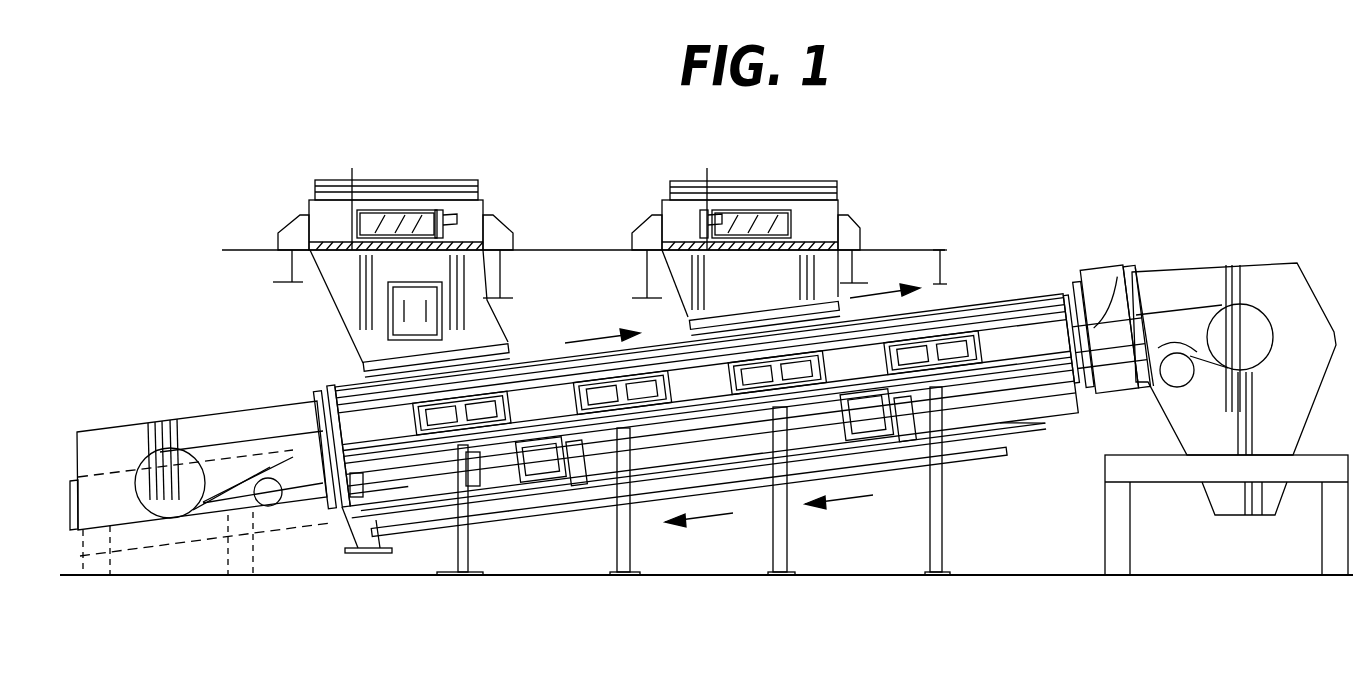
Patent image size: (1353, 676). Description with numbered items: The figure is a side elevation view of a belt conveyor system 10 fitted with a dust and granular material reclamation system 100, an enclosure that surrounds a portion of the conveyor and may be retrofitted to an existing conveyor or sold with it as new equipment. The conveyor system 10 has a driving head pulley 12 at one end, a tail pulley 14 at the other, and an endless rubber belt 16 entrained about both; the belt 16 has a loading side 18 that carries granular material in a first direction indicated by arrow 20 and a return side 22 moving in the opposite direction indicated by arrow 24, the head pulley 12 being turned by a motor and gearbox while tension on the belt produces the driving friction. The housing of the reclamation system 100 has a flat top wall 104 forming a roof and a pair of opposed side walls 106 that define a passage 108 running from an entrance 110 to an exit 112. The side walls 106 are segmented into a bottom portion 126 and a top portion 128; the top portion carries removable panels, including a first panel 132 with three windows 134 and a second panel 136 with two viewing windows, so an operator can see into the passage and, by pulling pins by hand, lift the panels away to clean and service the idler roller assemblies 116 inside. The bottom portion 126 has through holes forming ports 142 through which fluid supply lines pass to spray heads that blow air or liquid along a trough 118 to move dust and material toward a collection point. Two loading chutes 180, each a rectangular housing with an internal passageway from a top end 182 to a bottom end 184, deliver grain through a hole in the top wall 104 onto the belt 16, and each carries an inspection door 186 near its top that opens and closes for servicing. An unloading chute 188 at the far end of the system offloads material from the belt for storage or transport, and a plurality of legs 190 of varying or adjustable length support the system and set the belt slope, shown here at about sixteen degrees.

The belt conveyor system 10 is at (100, 405).
The driving head pulley 12 is at (1258, 333).
The tail pulley 14 is at (160, 500).
The endless belt 16 is at (200, 440).
The loading side 18 is at (1187, 310).
The arrow 20 is at (600, 345).
The return side 22 is at (1118, 350).
The arrow 24 is at (715, 518).
The dust reclamation system 100 is at (600, 270).
The top wall 104 is at (338, 392).
The side walls 106 is at (1028, 327).
The passage 108 is at (318, 400).
The entrance 110 is at (313, 497).
The exit 112 is at (1092, 312).
The idler roller assemblies 116 is at (553, 520).
The trough 118 is at (995, 470).
The bottom portion 126 is at (415, 487).
The top portion 128 is at (848, 330).
The first panel 132 is at (960, 267).
The windows 134 is at (700, 367).
The second panel 136 is at (518, 397).
The ports 142 is at (920, 413).
The loading chutes 180 is at (283, 208).
The top end 182 is at (370, 180).
The bottom end 184 is at (503, 327).
The inspection doors 186 is at (745, 215).
The unloading chute 188 is at (1302, 255).
The legs 190 is at (458, 566).